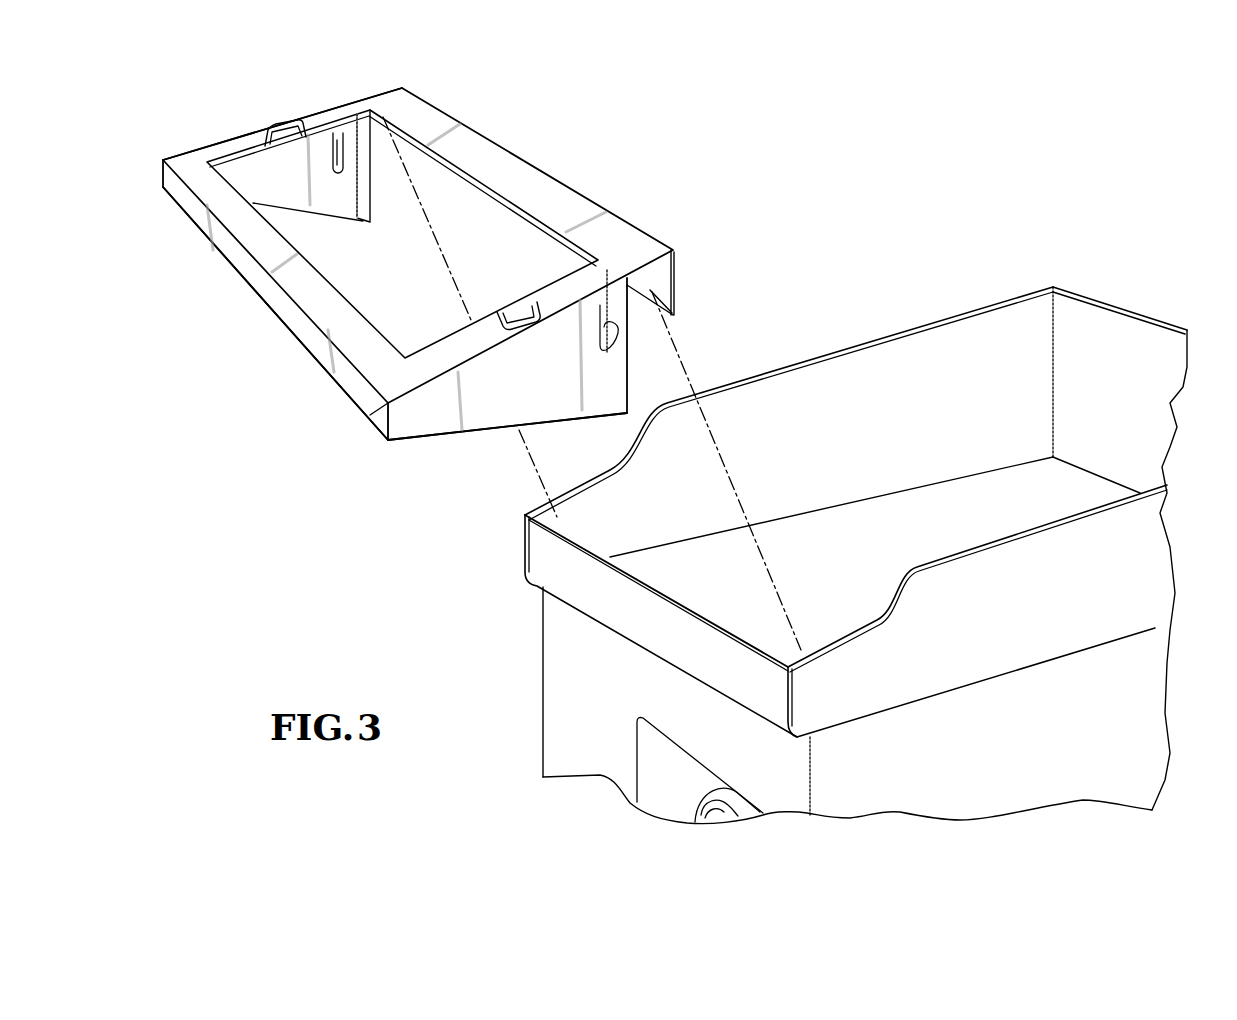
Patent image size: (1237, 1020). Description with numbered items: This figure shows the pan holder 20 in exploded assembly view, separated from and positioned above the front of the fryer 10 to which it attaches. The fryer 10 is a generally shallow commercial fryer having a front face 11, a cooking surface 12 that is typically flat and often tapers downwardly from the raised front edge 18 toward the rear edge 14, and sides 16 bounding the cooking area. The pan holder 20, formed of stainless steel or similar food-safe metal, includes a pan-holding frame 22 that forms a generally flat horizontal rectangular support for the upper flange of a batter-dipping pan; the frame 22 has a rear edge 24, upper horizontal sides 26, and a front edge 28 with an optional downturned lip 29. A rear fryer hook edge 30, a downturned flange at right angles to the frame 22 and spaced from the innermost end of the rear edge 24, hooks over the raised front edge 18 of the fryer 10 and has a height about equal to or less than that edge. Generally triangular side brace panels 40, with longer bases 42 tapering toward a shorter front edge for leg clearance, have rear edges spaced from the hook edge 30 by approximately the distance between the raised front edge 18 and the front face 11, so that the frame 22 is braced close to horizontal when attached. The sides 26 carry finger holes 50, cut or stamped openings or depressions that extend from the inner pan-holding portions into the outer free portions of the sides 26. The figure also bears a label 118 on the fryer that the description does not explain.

The fryer 10 is at (1072, 272).
The front face 11 is at (605, 690).
The cooking surface 12 is at (943, 473).
The rear edge 14 is at (1160, 345).
The sides 16 is at (846, 388).
The raised front edge 18 is at (625, 613).
The pan holder 20 is at (509, 133).
The pan-holding frame 22 is at (245, 262).
The rear edge 24 is at (565, 201).
The sides 26 is at (231, 147).
The front edge 28 is at (332, 310).
The downturned lip 29 is at (364, 399).
The rear fryer hook edge 30 is at (692, 266).
The side brace panels 40 is at (305, 152).
The longer bases 42 is at (372, 130).
The finger holes 50 is at (285, 139).
The floor edge 118 is at (723, 608).